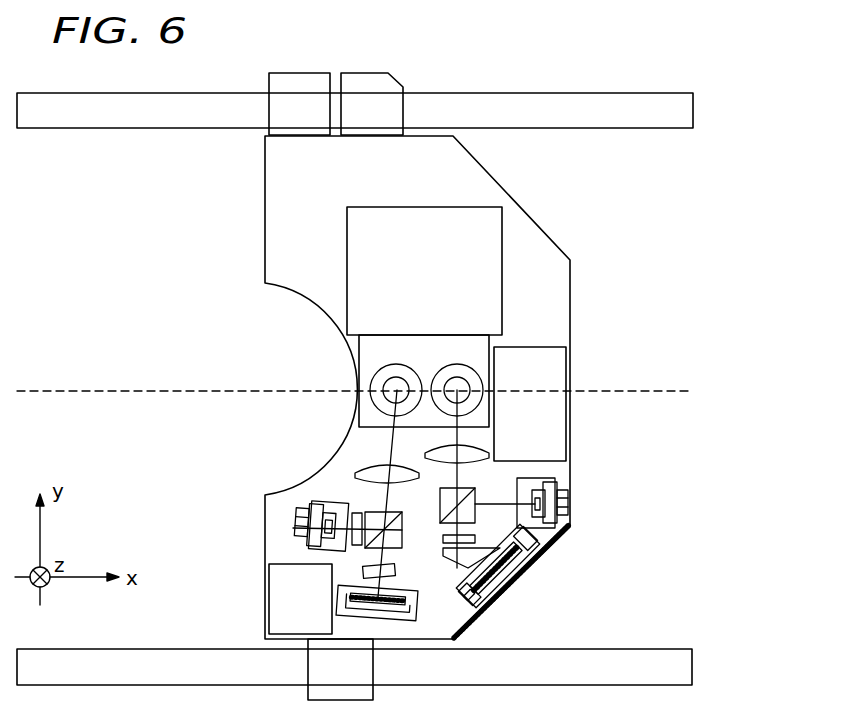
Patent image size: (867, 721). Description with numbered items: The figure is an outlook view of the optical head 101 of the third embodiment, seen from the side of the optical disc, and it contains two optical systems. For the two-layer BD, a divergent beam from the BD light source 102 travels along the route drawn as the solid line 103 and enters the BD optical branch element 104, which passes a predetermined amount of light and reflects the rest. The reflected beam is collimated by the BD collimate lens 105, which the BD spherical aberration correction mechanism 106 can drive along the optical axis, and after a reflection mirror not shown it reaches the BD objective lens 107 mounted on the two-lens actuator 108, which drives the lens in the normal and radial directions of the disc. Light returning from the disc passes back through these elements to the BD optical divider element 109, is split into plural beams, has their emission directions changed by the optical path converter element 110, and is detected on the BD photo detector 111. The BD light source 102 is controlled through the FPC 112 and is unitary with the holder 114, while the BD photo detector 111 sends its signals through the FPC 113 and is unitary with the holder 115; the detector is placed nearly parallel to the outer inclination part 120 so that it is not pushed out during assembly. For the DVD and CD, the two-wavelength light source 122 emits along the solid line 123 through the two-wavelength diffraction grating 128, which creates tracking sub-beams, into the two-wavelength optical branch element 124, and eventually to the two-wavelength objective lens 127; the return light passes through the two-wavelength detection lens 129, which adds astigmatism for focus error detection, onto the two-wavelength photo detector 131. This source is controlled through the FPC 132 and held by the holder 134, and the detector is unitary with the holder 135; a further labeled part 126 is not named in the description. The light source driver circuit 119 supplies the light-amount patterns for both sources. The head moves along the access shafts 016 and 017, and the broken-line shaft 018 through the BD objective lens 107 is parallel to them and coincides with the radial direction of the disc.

The access shaft 016 is at (688, 110).
The access shaft 017 is at (686, 660).
The shaft 018 is at (667, 386).
The optical head 101 is at (572, 287).
The BD light source 102 is at (565, 478).
The solid line 103 is at (492, 502).
The BD optical branch element 104 is at (440, 505).
The BD collimate lens 105 is at (440, 450).
The BD spherical aberration correction mechanism 106 is at (562, 427).
The BD objective lens 107 is at (457, 378).
The two-lens actuator 108 is at (347, 250).
The BD optical divider element 109 is at (532, 563).
The optical path converter element 110 is at (461, 570).
The BD photo detector 111 is at (476, 598).
The FPC 112 is at (569, 500).
The FPC 113 is at (518, 592).
The holder 114 is at (538, 530).
The holder 115 is at (489, 608).
The light source driver circuit 119 is at (269, 600).
The outer inclination part 120 is at (571, 529).
The two-wavelength light source 122 is at (358, 506).
The solid line 123 is at (375, 462).
The two-wavelength optical branch element 124 is at (403, 541).
The lens holder 126 is at (357, 472).
The two-wavelength objective lens 127 is at (383, 377).
The two-wavelength diffraction grating 128 is at (313, 488).
The two-wavelength detection lens 129 is at (363, 572).
The two-wavelength photo detector 131 is at (395, 620).
The FPC 132 is at (295, 526).
The holder 134 is at (352, 541).
The holder 135 is at (417, 622).